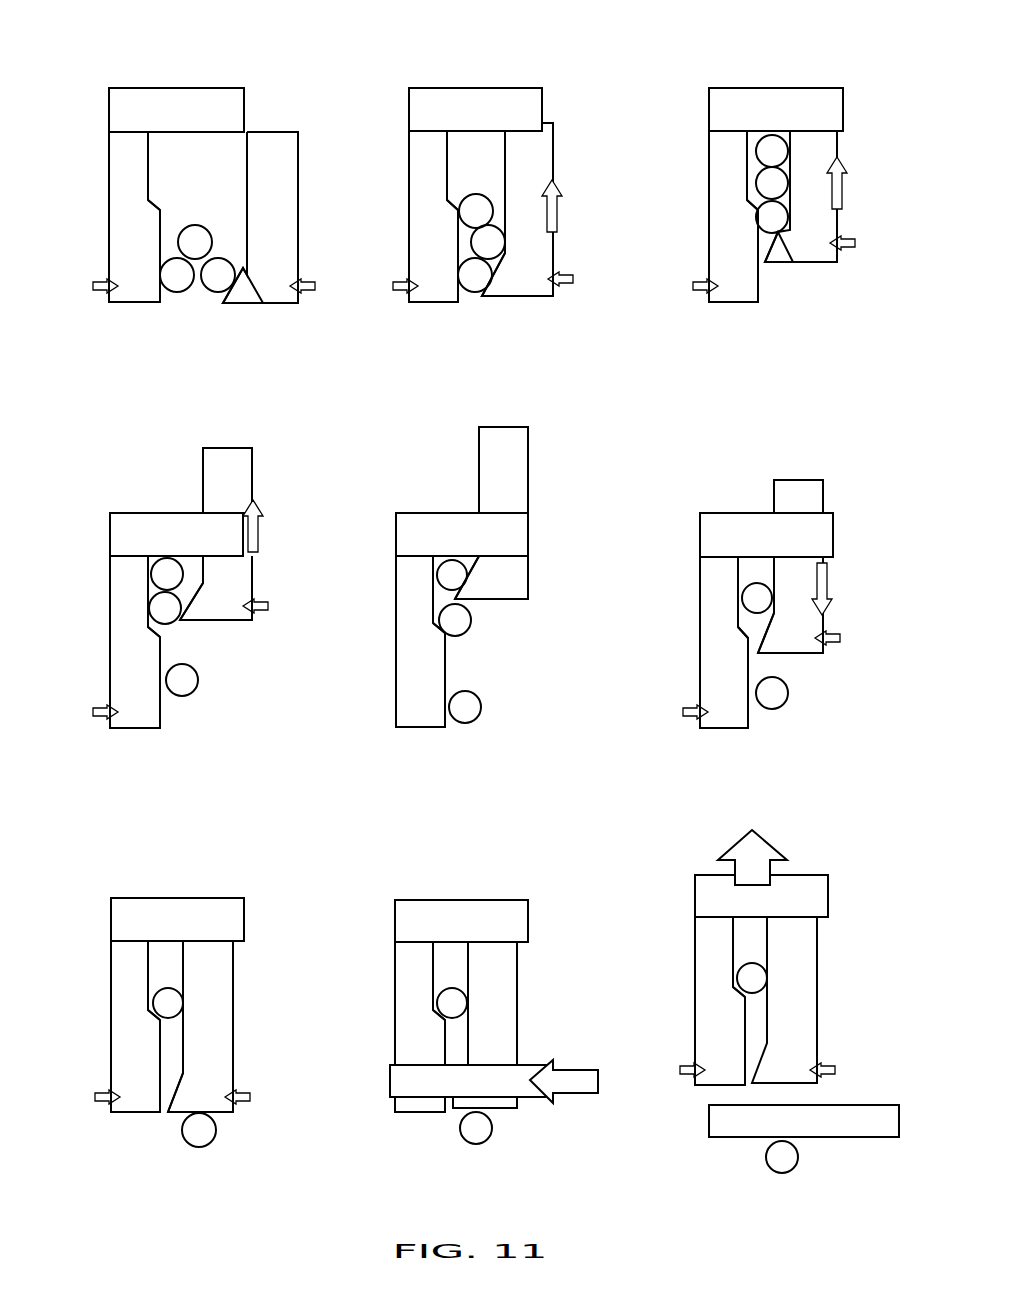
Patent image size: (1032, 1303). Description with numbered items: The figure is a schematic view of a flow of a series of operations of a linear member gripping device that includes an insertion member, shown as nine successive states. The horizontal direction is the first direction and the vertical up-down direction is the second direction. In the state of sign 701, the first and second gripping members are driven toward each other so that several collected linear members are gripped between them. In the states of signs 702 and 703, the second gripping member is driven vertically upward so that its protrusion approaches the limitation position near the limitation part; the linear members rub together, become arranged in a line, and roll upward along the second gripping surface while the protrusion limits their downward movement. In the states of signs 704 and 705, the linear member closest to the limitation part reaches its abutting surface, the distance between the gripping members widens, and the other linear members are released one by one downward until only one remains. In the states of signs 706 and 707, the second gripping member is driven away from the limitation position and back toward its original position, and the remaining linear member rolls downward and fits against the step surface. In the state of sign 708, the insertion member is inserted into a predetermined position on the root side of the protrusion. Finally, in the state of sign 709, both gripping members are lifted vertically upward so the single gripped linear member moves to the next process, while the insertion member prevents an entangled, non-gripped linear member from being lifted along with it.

The sign 701 is at (96, 44).
The sign 702 is at (396, 44).
The sign 703 is at (696, 44).
The sign 704 is at (98, 432).
The sign 705 is at (396, 415).
The sign 706 is at (696, 472).
The sign 707 is at (98, 854).
The sign 708 is at (383, 854).
The sign 709 is at (683, 827).